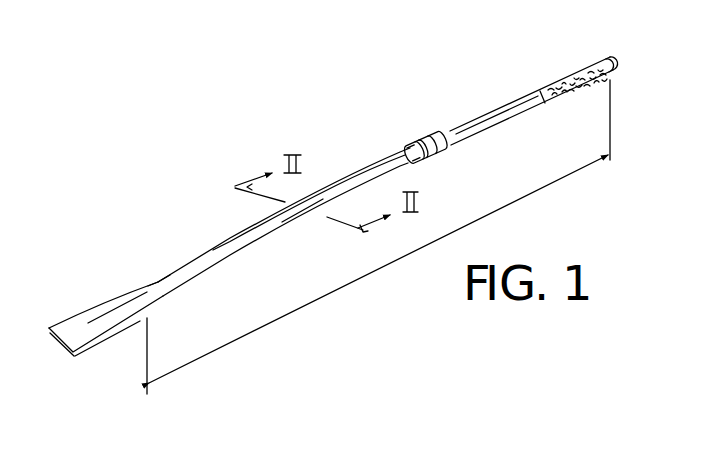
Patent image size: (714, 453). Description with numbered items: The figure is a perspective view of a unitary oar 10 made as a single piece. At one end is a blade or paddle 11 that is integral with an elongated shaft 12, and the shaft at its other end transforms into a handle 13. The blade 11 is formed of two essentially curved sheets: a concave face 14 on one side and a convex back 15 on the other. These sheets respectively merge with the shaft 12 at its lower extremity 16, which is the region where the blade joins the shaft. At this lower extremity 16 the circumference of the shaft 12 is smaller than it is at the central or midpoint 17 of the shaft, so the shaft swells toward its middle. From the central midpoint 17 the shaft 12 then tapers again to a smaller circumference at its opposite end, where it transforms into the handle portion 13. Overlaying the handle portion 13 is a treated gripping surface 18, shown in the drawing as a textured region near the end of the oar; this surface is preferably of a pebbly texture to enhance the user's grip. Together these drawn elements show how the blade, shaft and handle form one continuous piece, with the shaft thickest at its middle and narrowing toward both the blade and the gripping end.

The unitary oar 10 is at (367, 117).
The blade 11 is at (61, 312).
The shaft 12 is at (336, 177).
The handle 13 is at (548, 74).
The concave face 14 is at (108, 307).
The convex back 15 is at (86, 353).
The lower extremity 16 is at (158, 281).
The central midpoint 17 is at (385, 158).
The treated gripping surface 18 is at (592, 63).